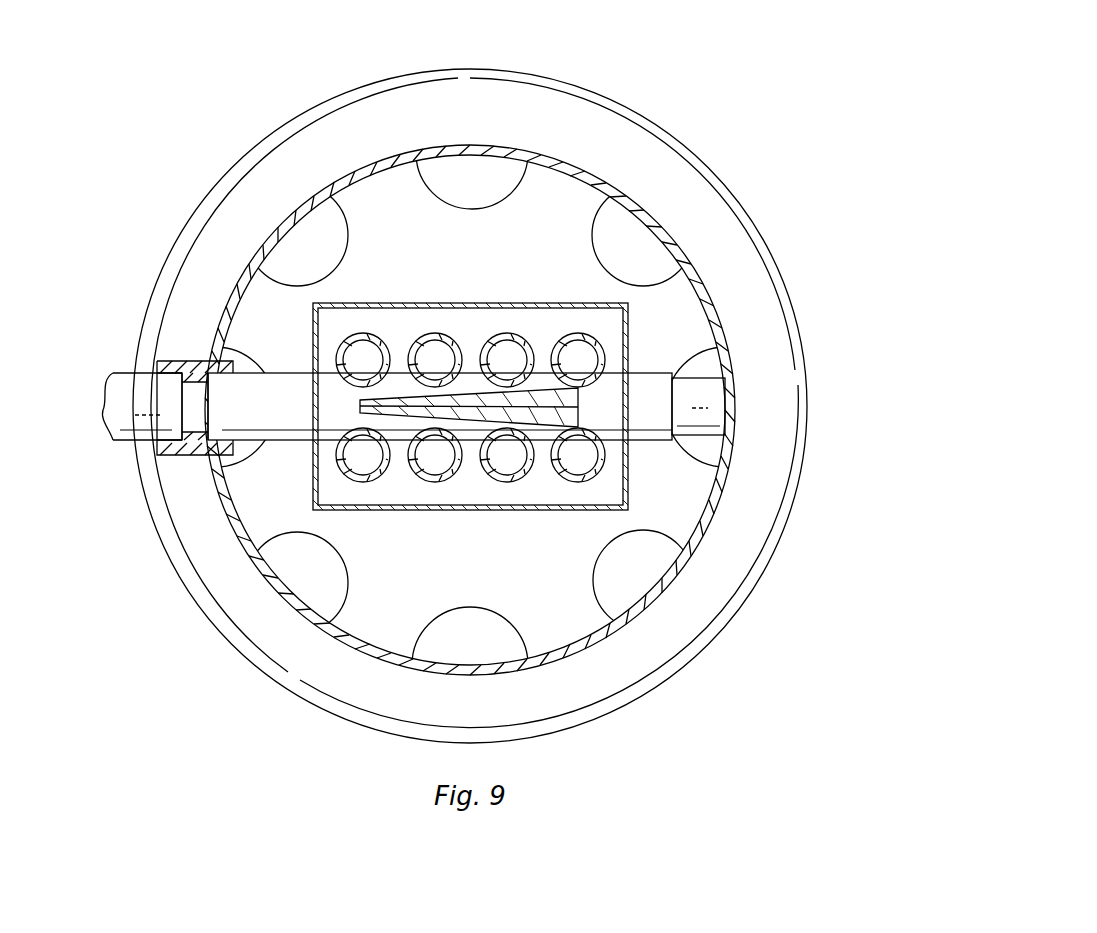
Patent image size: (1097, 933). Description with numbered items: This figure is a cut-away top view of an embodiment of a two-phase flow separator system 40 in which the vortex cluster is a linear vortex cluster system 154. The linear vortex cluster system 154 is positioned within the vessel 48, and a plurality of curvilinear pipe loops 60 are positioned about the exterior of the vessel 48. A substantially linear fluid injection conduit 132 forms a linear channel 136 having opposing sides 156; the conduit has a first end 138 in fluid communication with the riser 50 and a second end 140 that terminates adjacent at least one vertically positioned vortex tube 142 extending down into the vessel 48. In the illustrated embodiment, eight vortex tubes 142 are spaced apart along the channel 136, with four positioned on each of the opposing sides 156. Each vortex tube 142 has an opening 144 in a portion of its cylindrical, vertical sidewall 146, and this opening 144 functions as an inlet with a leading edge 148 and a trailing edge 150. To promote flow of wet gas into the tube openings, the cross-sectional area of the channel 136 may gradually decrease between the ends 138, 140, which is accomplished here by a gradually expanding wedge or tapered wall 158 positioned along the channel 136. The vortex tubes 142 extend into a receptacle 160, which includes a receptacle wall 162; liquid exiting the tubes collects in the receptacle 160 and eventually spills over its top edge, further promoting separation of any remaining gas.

The two-phase flow separator system 40 is at (722, 74).
The vessel 48 is at (418, 136).
The riser 50 is at (110, 373).
The curvilinear pipe loops 60 is at (738, 193).
The fluid injection conduit 132 is at (258, 441).
The linear channel 136 is at (266, 452).
The first end 138 is at (228, 362).
The second end 140 is at (725, 380).
The vortex tube 142 is at (430, 335).
The opening 144 is at (518, 352).
The cylindrical vertical sidewall 146 is at (457, 338).
The leading edge 148 is at (610, 368).
The trailing edge 150 is at (602, 465).
The linear vortex cluster system 154 is at (668, 292).
The opposing sides 156 is at (402, 355).
The tapered wall 158 is at (540, 355).
The receptacle 160 is at (530, 302).
The receptacle wall 162 is at (340, 302).